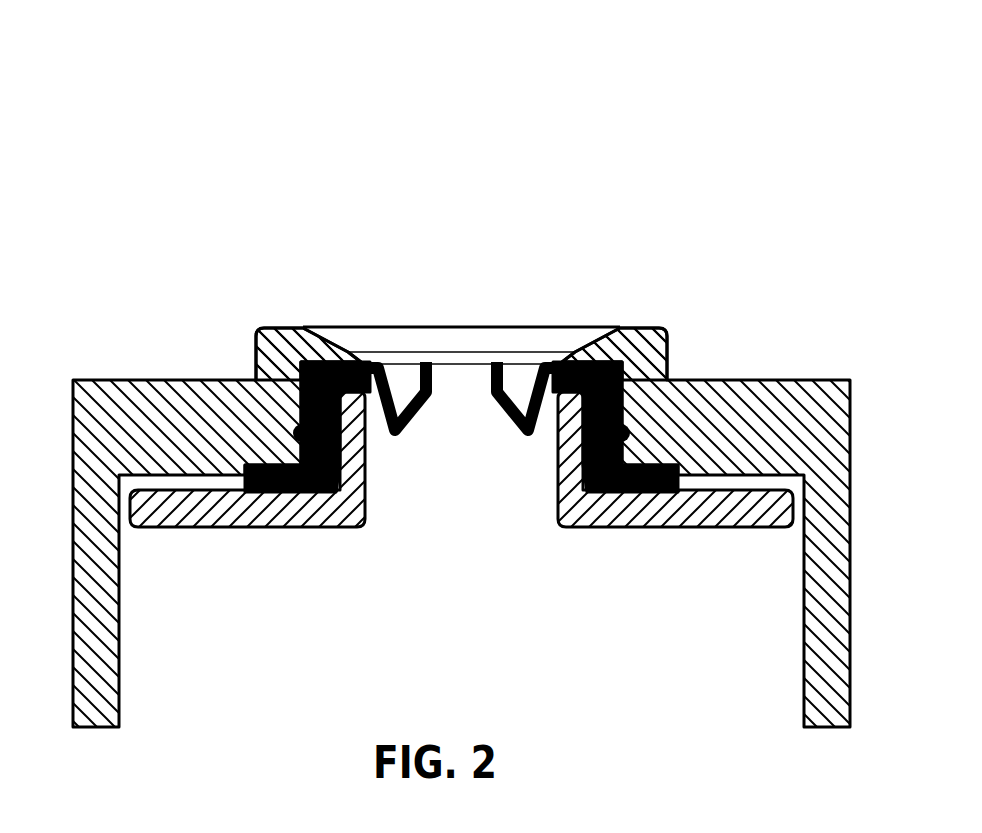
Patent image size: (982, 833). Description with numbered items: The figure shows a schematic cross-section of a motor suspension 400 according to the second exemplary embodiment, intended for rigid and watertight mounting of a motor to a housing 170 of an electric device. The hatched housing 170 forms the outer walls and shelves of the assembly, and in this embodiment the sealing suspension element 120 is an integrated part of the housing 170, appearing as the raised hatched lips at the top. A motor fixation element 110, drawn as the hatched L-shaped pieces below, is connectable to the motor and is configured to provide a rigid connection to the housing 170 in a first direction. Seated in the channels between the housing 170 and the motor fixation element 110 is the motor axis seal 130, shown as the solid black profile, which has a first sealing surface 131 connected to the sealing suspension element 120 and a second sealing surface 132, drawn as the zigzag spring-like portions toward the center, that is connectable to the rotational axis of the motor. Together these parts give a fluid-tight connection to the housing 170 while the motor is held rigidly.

The motor suspension 400 is at (195, 142).
The housing 170 is at (60, 384).
The sealing suspension element 120 is at (283, 337).
The motor fixation element 110 is at (250, 510).
The motor axis seal 130 is at (618, 430).
The first sealing surface 131 is at (623, 368).
The second sealing surface 132 is at (500, 363).